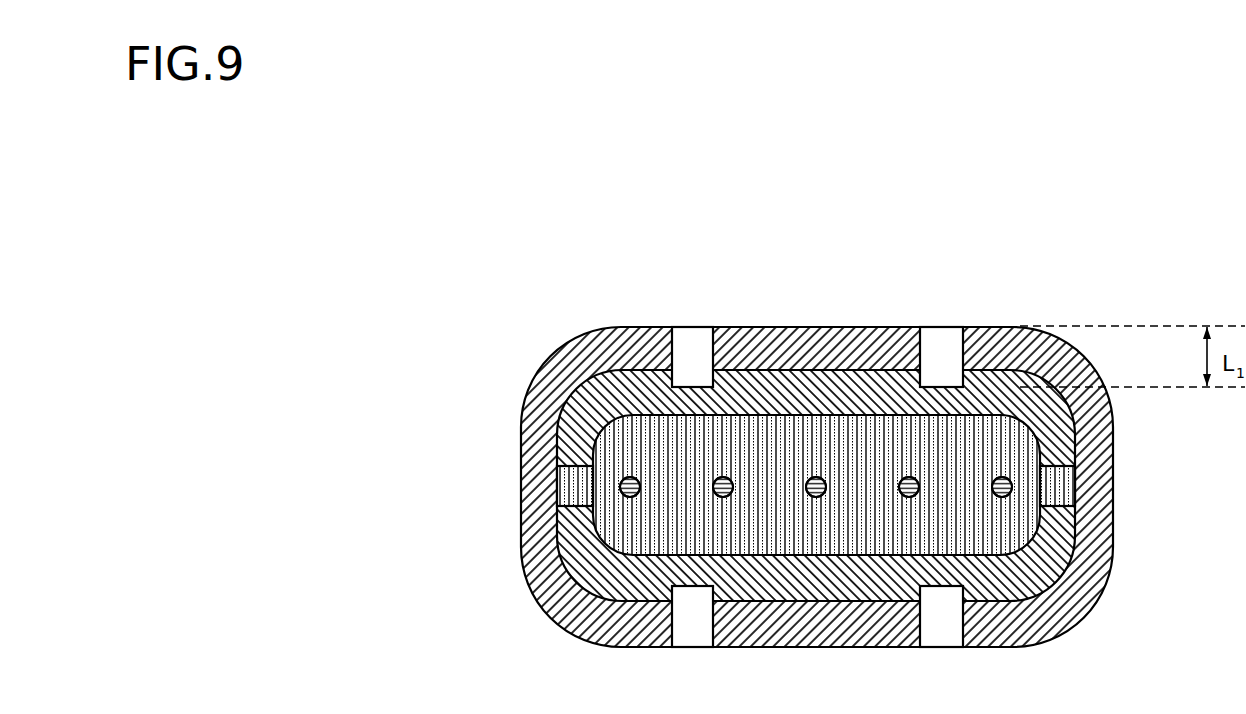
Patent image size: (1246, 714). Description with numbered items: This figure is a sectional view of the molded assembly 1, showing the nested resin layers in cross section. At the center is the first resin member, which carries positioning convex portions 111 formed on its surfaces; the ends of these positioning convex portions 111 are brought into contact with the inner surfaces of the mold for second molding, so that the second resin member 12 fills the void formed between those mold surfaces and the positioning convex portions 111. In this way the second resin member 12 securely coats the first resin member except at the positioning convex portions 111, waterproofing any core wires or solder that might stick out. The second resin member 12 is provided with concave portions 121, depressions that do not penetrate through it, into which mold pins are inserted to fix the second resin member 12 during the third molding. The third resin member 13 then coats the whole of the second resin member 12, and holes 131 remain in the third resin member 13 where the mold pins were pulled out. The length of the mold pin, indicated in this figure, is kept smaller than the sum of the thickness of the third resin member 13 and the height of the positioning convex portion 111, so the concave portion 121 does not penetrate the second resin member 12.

The reactor / inductor assembly 1 is at (774, 391).
The second resin member 12 is at (598, 372).
The third resin member 13 is at (870, 327).
The positioning convex portion 111 is at (558, 476).
The concave portion 121 is at (693, 386).
The hole 131 is at (680, 327).